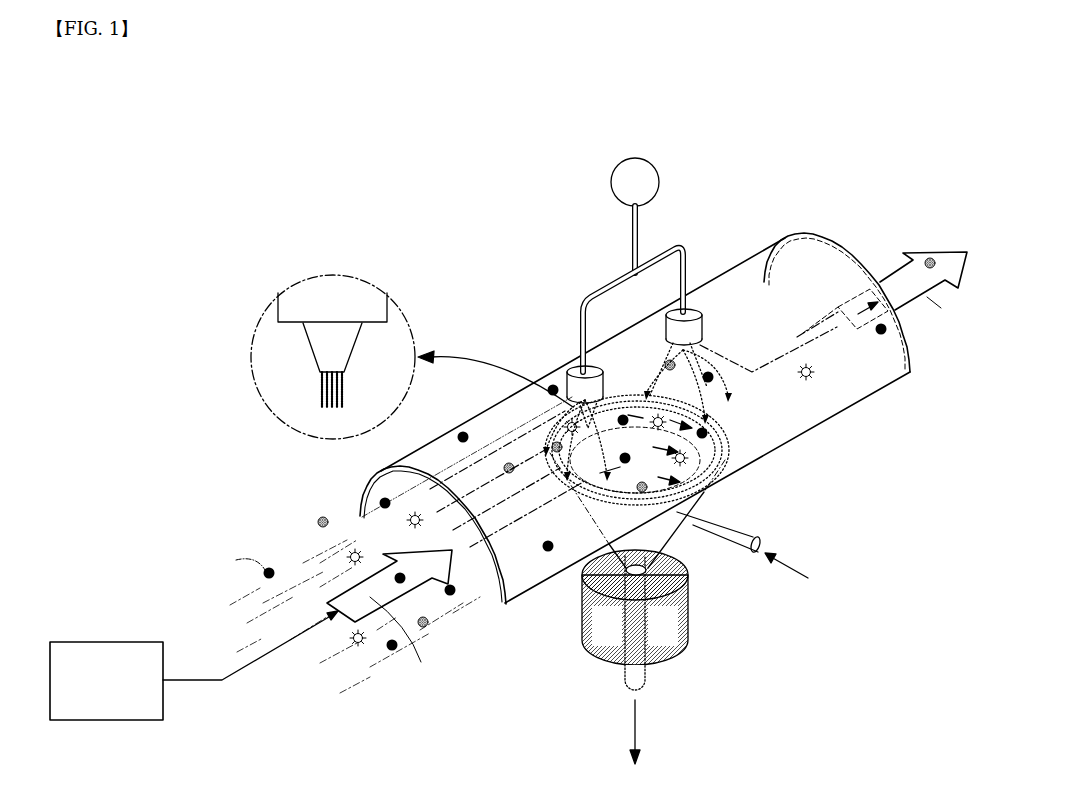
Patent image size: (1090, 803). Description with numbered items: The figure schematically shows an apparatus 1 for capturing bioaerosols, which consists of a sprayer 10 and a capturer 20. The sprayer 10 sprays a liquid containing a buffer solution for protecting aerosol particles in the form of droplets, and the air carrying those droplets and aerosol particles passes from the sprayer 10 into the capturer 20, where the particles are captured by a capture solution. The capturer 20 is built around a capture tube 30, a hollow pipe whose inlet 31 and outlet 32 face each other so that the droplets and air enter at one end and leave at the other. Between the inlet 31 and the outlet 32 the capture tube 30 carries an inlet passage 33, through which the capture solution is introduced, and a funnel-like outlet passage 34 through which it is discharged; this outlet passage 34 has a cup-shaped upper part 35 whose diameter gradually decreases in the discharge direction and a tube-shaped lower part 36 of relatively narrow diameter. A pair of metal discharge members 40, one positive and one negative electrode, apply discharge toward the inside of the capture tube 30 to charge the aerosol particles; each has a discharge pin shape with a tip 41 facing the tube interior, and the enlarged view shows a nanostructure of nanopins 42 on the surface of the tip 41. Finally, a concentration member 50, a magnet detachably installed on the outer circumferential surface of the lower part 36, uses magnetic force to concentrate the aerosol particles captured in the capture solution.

The apparatus for capturing bioaerosols 1 is at (451, 196).
The sprayer 10 is at (125, 642).
The capturer 20 is at (833, 214).
The capture tube 30 is at (813, 411).
The inlet 31 is at (493, 598).
The outlet 32 is at (846, 252).
The inlet passage 33 is at (722, 521).
The outlet passage 34 is at (676, 616).
The upper part 35 is at (682, 589).
The lower part 36 is at (659, 644).
The discharge member 40 is at (676, 312).
The tip 41 is at (343, 343).
The nanopins 42 is at (343, 388).
The concentration member 50 is at (603, 656).